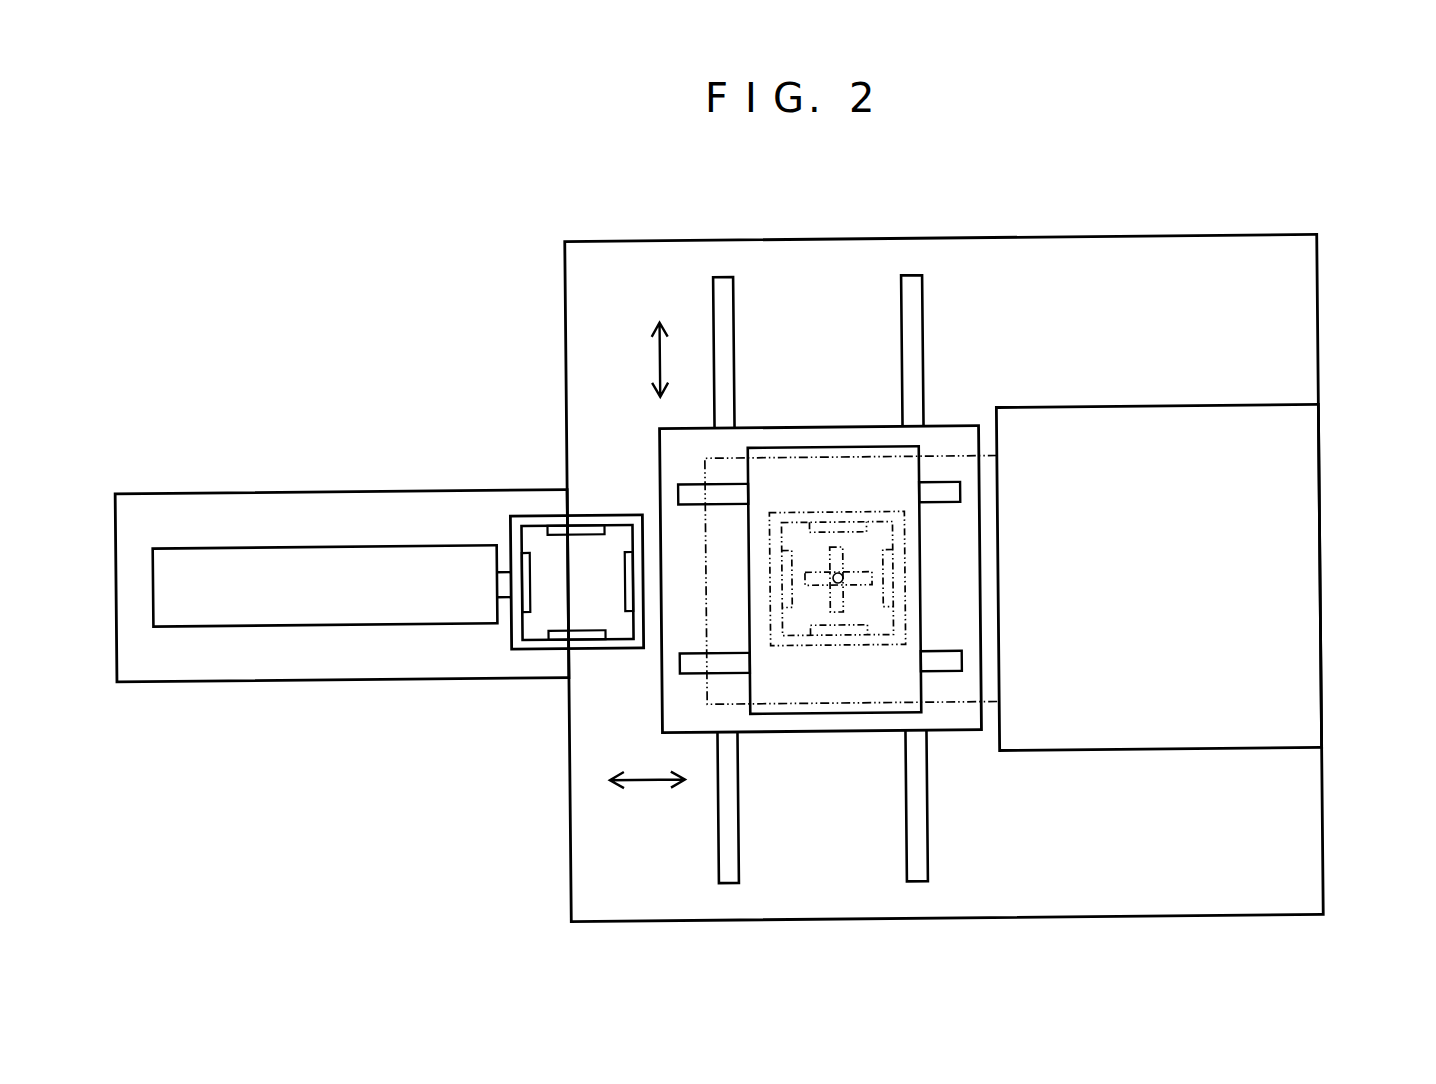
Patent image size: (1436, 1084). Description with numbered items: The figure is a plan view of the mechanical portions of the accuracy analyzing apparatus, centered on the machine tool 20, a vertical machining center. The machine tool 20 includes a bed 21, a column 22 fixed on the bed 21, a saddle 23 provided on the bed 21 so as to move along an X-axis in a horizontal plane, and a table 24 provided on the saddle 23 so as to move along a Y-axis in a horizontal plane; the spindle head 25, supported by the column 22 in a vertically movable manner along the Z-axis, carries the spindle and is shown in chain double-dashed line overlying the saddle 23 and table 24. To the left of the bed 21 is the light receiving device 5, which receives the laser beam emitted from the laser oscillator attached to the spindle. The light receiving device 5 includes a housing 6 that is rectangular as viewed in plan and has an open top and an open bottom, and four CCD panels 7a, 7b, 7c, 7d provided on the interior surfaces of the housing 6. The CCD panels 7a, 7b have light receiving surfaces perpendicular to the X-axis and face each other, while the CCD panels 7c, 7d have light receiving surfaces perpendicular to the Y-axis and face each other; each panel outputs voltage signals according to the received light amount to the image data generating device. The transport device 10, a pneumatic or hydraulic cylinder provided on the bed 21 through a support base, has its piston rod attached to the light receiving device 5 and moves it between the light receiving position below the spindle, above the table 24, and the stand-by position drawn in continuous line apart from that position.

The light receiving device 5 is at (538, 585).
The housing 6 is at (626, 514).
The CCD panel 7a is at (554, 611).
The CCD panel 7b is at (560, 537).
The CCD panel 7c is at (532, 582).
The CCD panel 7d is at (622, 581).
The transport device 10 is at (265, 607).
The machine tool 20 is at (923, 577).
The bed 21 is at (1320, 334).
The column 22 is at (1320, 582).
The saddle 23 is at (811, 436).
The table 24 is at (820, 712).
The spindle head 25 is at (944, 455).